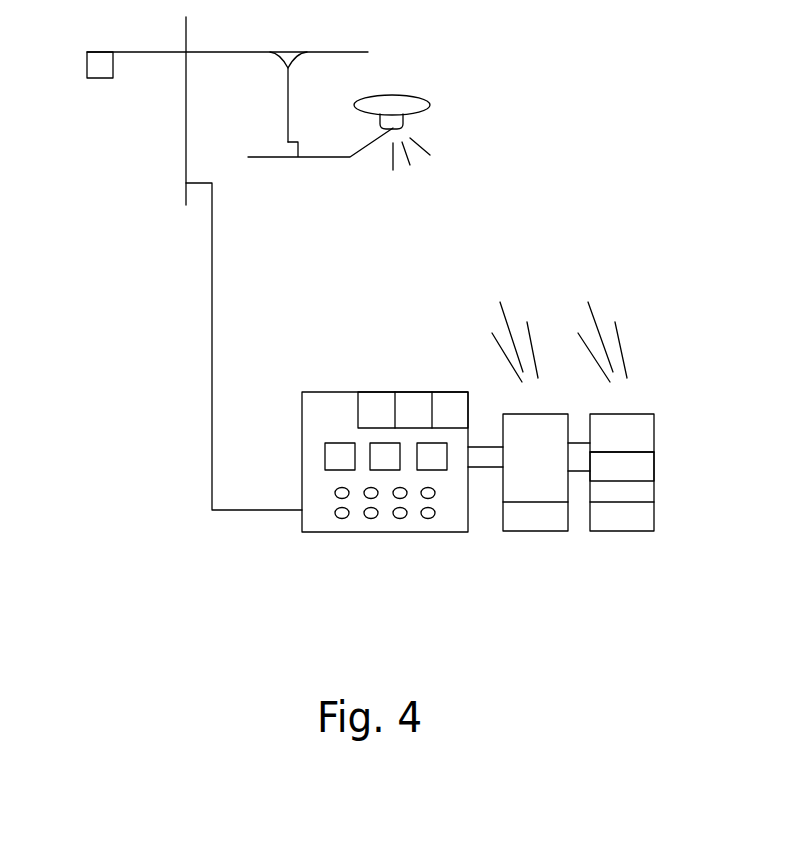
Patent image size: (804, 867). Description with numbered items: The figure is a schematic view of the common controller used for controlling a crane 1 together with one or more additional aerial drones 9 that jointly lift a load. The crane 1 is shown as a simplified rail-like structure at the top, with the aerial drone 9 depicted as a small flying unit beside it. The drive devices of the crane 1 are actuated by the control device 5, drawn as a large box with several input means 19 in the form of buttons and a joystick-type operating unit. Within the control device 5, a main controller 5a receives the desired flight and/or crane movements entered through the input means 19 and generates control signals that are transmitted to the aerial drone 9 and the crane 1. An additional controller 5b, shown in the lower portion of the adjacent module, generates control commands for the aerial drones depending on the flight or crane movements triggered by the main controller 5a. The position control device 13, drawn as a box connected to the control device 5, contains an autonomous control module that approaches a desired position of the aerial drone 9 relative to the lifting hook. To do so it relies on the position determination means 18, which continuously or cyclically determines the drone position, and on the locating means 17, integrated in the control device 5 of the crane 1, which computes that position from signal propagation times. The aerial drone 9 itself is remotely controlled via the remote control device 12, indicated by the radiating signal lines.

The crane 1 is at (177, 117).
The aerial drone 9 is at (437, 100).
The control device 5 is at (385, 478).
The main controller 5a is at (323, 422).
The input means 19 is at (372, 518).
The position control device 13 is at (539, 523).
The additional controller 5b is at (553, 537).
The locating means 17 is at (637, 433).
The position determination means 18 is at (632, 467).
The remote control device 12 is at (633, 365).